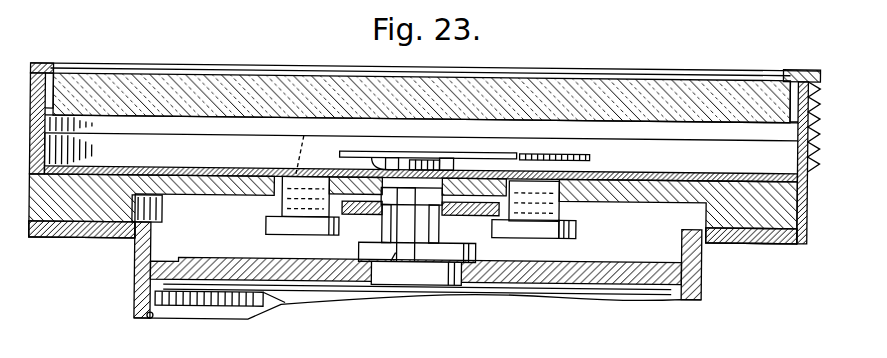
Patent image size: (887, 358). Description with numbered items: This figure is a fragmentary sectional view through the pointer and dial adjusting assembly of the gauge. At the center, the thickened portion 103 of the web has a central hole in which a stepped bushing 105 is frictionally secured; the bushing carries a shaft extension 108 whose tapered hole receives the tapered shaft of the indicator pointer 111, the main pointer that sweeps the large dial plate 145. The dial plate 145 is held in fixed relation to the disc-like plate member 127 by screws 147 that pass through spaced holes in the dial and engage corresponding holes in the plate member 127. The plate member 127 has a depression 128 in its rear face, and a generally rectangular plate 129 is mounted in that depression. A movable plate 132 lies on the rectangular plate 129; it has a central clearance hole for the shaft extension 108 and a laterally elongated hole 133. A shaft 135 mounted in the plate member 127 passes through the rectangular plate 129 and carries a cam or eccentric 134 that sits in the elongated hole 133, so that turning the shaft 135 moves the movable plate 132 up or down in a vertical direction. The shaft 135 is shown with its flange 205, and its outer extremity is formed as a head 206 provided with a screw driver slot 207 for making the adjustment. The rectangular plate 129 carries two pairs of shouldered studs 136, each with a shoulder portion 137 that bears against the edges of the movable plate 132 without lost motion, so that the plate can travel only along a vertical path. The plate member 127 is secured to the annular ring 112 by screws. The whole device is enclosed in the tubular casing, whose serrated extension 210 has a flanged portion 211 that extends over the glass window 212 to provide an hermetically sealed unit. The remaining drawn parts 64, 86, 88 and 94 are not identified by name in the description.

The carriage assembly 64 is at (382, 286).
The rack 86 is at (219, 310).
The pin 88 is at (151, 323).
The side wall 94 is at (150, 247).
The thickened portion 103 is at (202, 272).
The stepped bushing 105 is at (395, 256).
The shaft extension 108 is at (378, 158).
The indicator pointer 111 is at (520, 138).
The annular ring 112 is at (755, 243).
The plate member 127 is at (650, 164).
The depression 128 is at (173, 194).
The rectangular plate 129 is at (268, 203).
The movable plate 132 is at (482, 222).
The elongated hole 133 is at (396, 224).
The cam or eccentric 134 is at (433, 222).
The shaft 135 is at (397, 242).
The shouldered studs 136 is at (276, 238).
The shoulder portion 137 is at (325, 186).
The dial plate 145 is at (128, 163).
The screws 147 is at (548, 138).
The flange 205 is at (456, 158).
The head 206 is at (452, 158).
The screw driver slot 207 is at (412, 158).
The extension 210 is at (800, 133).
The flanged portion 211 is at (800, 68).
The glass window 212 is at (572, 84).